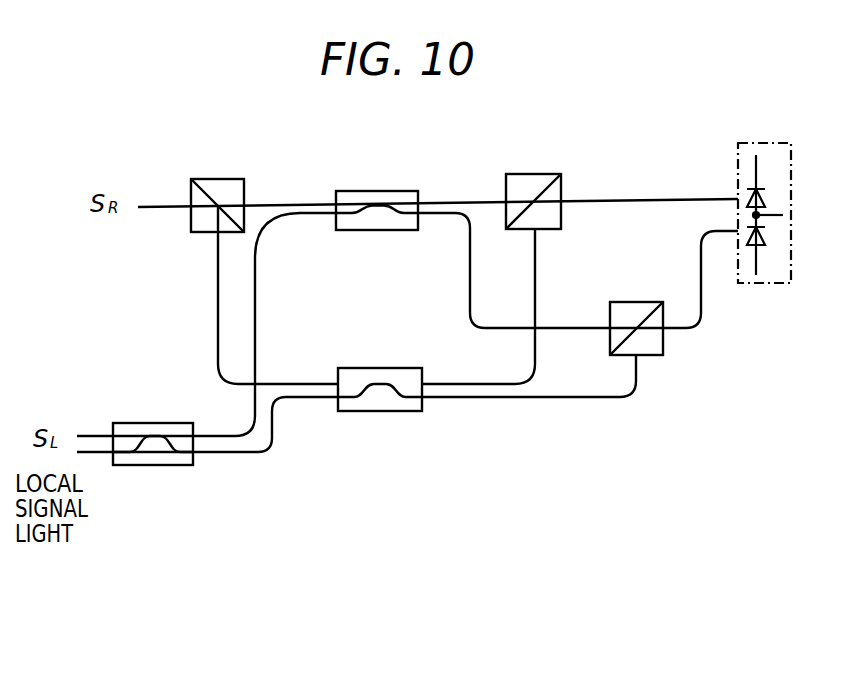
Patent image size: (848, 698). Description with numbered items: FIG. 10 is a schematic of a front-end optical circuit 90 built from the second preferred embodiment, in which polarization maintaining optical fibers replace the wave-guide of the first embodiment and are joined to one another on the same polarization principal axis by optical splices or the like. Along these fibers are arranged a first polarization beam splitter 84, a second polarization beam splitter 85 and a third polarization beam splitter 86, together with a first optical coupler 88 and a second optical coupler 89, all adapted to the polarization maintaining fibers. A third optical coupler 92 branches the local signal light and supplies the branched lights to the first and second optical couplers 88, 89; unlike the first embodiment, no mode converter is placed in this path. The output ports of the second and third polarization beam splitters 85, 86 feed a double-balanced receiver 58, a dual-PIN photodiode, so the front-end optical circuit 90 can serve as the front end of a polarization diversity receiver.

The first polarization beam splitter 84 is at (222, 179).
The second polarization beam splitter 85 is at (542, 174).
The third polarization beam splitter 86 is at (630, 302).
The first optical coupler 88 is at (393, 190).
The second optical coupler 89 is at (382, 368).
The third optical coupler 92 is at (146, 380).
The double-balanced receiver 58 is at (770, 283).
The front-end optical circuit 90 is at (407, 385).